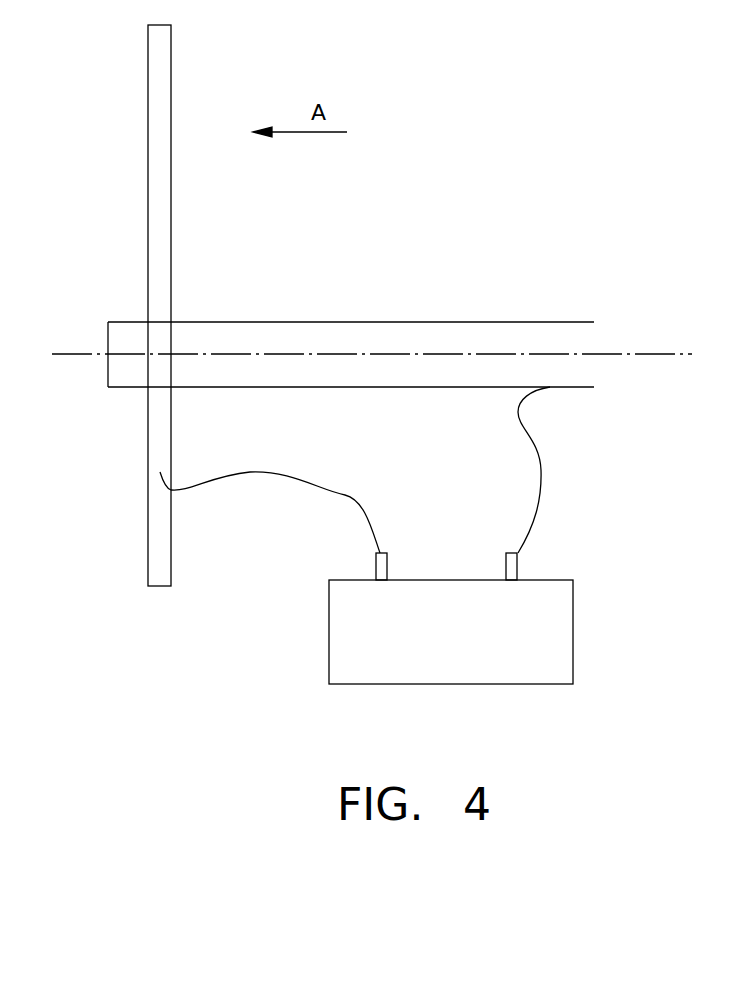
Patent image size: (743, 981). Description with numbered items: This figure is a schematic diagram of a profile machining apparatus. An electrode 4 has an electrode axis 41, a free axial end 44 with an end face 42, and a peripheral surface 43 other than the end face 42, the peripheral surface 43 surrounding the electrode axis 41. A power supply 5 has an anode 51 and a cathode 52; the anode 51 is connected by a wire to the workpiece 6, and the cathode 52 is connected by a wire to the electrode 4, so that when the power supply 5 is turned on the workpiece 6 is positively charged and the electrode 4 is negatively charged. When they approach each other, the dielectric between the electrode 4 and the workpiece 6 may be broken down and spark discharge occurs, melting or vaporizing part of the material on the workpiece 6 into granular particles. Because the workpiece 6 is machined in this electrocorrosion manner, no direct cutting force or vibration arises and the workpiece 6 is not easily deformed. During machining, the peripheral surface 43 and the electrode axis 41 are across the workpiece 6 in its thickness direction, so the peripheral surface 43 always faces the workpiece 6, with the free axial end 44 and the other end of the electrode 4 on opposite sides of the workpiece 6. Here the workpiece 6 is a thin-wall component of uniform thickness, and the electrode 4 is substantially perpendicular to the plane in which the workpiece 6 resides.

The electrode 4 is at (389, 295).
The electrode axis 41 is at (664, 352).
The end face 42 is at (108, 347).
The peripheral surface 43 is at (413, 322).
The free axial end 44 is at (127, 308).
The power supply 5 is at (464, 610).
The anode 51 is at (376, 565).
The cathode 52 is at (519, 565).
The workpiece 6 is at (171, 67).